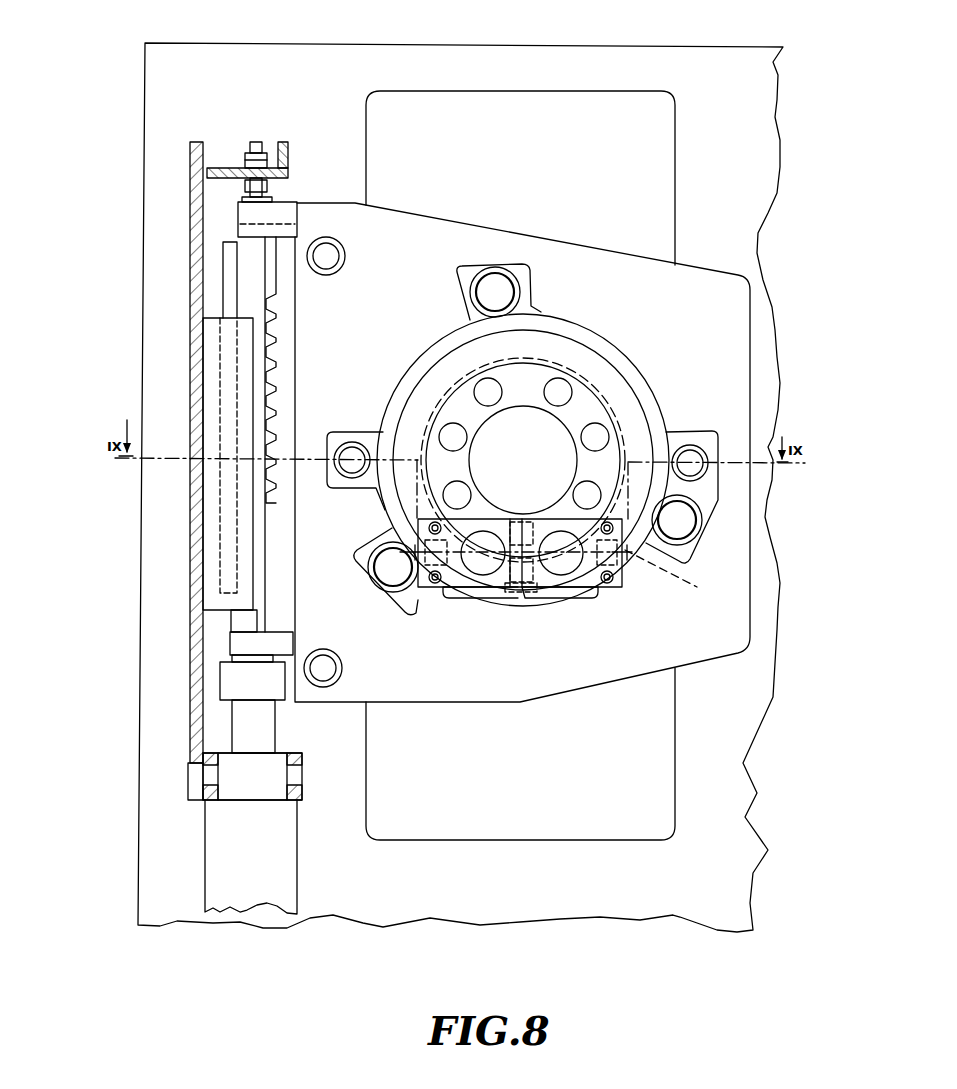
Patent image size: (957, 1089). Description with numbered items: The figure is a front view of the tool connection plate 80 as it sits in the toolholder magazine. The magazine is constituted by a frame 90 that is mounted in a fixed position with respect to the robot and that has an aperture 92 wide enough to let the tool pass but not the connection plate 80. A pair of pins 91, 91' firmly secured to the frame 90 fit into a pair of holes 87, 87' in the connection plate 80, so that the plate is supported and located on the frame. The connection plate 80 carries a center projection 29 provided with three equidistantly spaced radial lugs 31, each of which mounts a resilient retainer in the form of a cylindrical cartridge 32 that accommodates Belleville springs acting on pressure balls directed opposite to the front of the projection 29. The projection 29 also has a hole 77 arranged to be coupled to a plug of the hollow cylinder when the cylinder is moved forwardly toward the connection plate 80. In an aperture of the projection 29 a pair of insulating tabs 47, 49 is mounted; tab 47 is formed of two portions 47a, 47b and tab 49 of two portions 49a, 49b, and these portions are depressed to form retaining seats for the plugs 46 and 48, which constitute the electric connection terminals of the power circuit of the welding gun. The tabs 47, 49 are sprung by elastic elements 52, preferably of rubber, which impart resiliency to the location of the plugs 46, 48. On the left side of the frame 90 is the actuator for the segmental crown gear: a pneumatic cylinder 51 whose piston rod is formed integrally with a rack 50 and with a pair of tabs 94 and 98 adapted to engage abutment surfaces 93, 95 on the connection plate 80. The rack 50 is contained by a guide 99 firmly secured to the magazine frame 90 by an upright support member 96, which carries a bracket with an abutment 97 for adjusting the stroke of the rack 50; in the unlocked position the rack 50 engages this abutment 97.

The center projection 29 is at (640, 366).
The radial lugs 31 is at (470, 272).
The cylindrical cartridge 32 is at (500, 290).
The plug 46 is at (557, 544).
The insulating tab 47 is at (587, 600).
The portion of insulating tab 47a is at (585, 525).
The portion of insulating tab 47b is at (574, 594).
The plug 48 is at (483, 542).
The insulating tab 49 is at (490, 592).
The portion of insulating tab 49a is at (505, 597).
The portion of insulating tab 49b is at (483, 592).
The rack 50 is at (275, 474).
The pneumatic cylinder 51 is at (282, 847).
The elastic elements 52 is at (678, 579).
The hole 77 is at (350, 455).
The connection plate 80 is at (720, 282).
The hole 87 is at (389, 212).
The hole 87' is at (383, 724).
The frame 90 is at (177, 903).
The pin 91 is at (332, 216).
The pin 91' is at (326, 702).
The aperture 92 is at (608, 115).
The abutment surface 93 is at (262, 632).
The tab 94 is at (277, 645).
The abutment surface 95 is at (286, 202).
The upright support member 96 is at (202, 243).
The abutment 97 is at (247, 205).
The tab 98 is at (283, 218).
The guide 99 is at (205, 388).